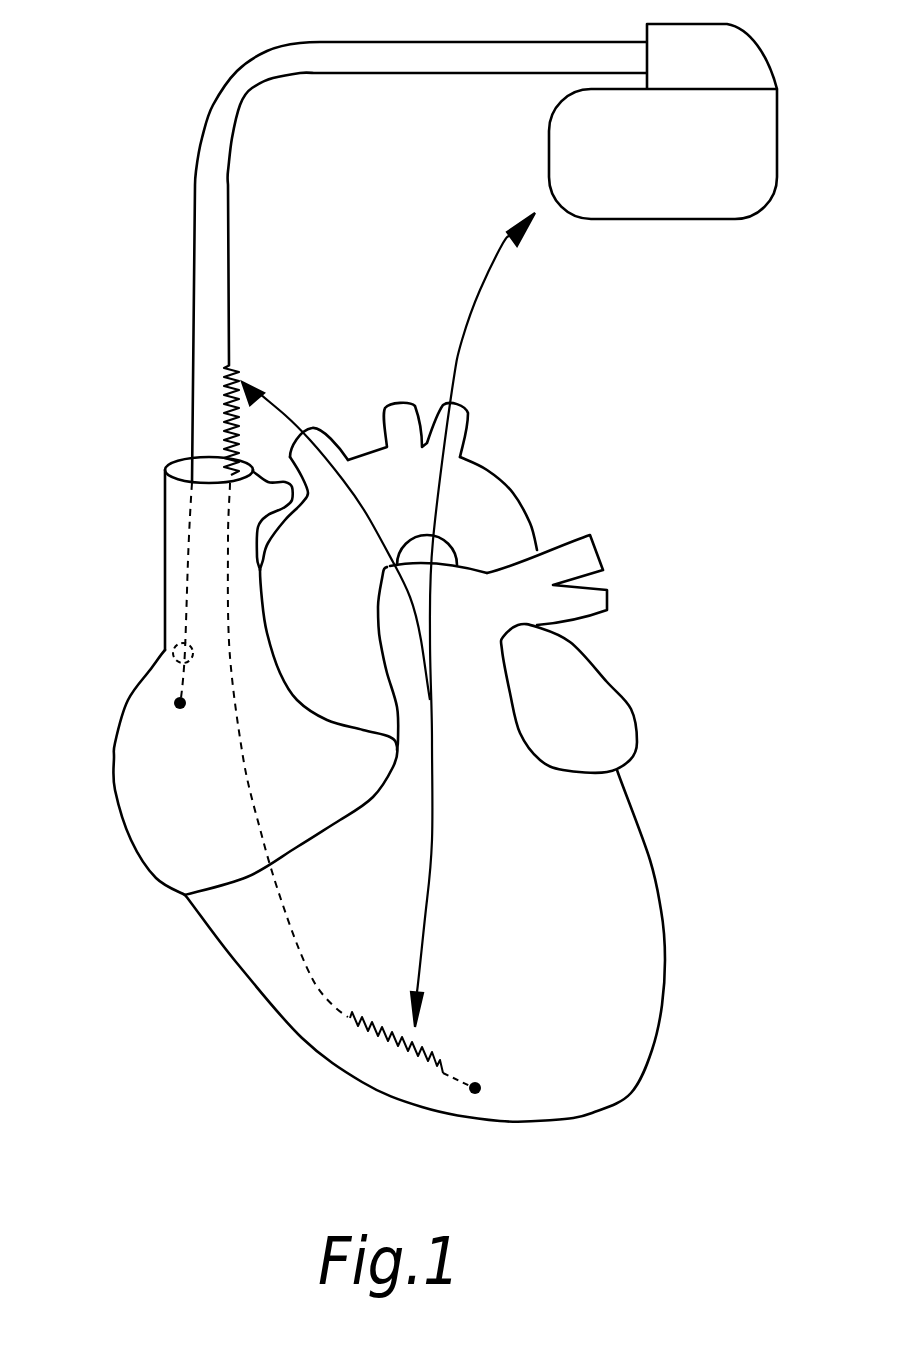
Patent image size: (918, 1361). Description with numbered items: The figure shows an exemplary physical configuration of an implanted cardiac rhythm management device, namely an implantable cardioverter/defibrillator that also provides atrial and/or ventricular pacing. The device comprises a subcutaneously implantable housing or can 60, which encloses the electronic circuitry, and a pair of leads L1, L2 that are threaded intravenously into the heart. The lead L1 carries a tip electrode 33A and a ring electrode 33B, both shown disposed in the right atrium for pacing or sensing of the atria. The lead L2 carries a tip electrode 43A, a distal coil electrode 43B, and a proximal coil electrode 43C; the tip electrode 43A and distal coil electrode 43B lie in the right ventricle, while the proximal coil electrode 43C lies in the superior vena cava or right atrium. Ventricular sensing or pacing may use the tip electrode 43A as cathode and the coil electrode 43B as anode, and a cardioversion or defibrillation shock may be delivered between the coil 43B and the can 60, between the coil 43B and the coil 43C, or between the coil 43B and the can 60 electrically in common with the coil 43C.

The can 60 is at (777, 127).
The lead L1 is at (198, 173).
The lead L2 is at (230, 237).
The proximal coil electrode 43C is at (236, 372).
The distal coil electrode 43B is at (437, 1058).
The tip electrode 43A is at (482, 1088).
The ring electrode 33B is at (172, 653).
The tip electrode 33A is at (174, 702).